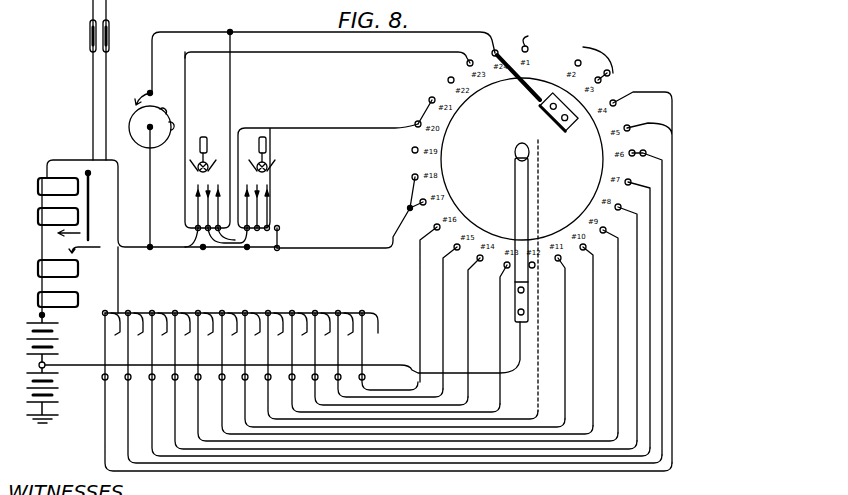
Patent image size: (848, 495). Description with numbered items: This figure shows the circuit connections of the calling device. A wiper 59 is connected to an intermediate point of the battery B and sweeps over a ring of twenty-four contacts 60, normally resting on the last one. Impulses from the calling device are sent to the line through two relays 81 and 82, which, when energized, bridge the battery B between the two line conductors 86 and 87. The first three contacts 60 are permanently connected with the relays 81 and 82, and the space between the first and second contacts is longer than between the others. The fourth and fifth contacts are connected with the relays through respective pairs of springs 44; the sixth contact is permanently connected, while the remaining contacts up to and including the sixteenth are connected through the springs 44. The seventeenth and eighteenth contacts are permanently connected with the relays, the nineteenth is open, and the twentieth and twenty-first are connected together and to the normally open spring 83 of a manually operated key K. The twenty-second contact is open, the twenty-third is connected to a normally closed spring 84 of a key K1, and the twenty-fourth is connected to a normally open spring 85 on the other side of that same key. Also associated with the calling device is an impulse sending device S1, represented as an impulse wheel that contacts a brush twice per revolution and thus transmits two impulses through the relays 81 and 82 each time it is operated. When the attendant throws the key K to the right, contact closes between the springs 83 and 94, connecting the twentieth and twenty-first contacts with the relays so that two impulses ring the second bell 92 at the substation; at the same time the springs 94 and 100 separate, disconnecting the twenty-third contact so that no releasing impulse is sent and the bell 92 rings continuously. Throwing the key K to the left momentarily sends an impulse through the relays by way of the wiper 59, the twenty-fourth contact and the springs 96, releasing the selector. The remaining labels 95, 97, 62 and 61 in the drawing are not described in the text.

The line conductor 86 is at (90, 72).
The line conductor 87 is at (108, 72).
The relay 81 is at (58, 182).
The relay 82 is at (80, 268).
The battery B is at (52, 368).
The impulse sending device S1 is at (153, 167).
The key K1 is at (207, 131).
The manually-operated key K is at (328, 169).
The spring 100 is at (277, 227).
The springs 96 is at (280, 246).
The normally closed spring 84 is at (196, 236).
The conductor 95 is at (190, 243).
The conductor 97 is at (212, 245).
The normally open spring 83 is at (240, 250).
The spring 94 is at (270, 250).
The normally open spring 85 is at (225, 252).
The bell 92 is at (245, 245).
The dial 62 is at (600, 142).
The contacts 60 is at (530, 191).
The wiper 59 is at (500, 52).
The brush holder block 61 is at (540, 45).
The springs 44 is at (345, 313).